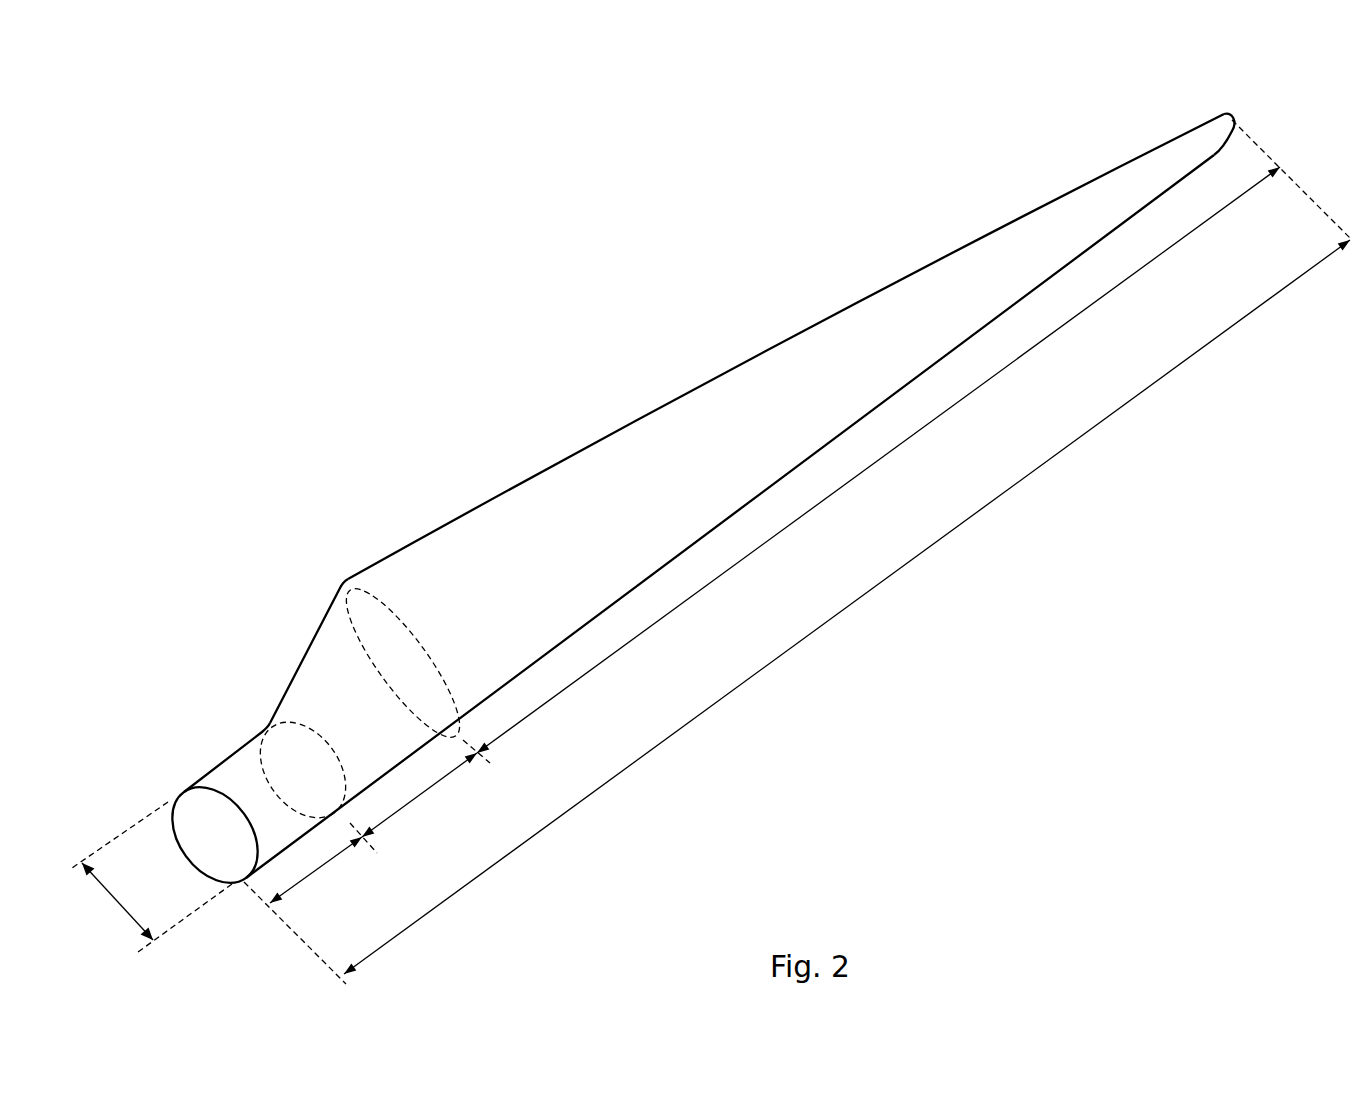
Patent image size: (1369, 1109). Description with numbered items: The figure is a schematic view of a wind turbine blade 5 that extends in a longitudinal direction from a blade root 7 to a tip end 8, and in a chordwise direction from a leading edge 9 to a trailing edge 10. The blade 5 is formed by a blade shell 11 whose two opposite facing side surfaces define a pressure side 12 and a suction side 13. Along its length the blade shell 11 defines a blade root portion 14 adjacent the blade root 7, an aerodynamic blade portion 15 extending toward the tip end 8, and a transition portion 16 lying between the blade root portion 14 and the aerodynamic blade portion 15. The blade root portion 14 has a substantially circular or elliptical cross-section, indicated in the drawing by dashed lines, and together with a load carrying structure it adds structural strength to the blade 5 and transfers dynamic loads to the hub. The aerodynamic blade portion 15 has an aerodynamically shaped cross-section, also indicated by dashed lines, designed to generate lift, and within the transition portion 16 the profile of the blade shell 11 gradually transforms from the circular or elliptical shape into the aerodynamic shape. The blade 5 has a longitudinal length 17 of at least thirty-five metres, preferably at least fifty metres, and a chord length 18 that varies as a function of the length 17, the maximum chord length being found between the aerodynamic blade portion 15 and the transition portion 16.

The wind turbine blade 5 is at (504, 361).
The blade root 7 is at (205, 851).
The tip end 8 is at (1232, 117).
The leading edge 9 is at (913, 380).
The trailing edge 10 is at (923, 270).
The blade shell 11 is at (685, 418).
The pressure side 12 is at (357, 637).
The suction side 13 is at (797, 417).
The blade root portion 14 is at (322, 873).
The aerodynamic blade portion 15 is at (797, 520).
The transition portion 16 is at (422, 793).
The longitudinal length 17 is at (758, 672).
The chord length 18 is at (125, 912).